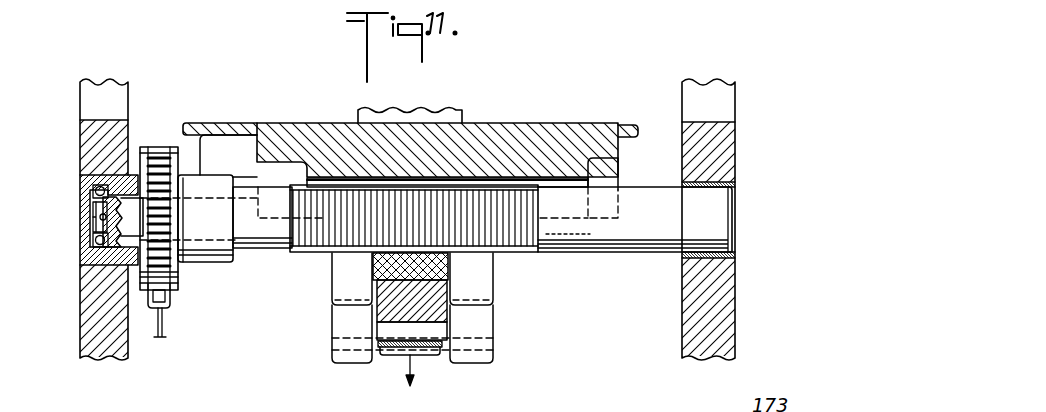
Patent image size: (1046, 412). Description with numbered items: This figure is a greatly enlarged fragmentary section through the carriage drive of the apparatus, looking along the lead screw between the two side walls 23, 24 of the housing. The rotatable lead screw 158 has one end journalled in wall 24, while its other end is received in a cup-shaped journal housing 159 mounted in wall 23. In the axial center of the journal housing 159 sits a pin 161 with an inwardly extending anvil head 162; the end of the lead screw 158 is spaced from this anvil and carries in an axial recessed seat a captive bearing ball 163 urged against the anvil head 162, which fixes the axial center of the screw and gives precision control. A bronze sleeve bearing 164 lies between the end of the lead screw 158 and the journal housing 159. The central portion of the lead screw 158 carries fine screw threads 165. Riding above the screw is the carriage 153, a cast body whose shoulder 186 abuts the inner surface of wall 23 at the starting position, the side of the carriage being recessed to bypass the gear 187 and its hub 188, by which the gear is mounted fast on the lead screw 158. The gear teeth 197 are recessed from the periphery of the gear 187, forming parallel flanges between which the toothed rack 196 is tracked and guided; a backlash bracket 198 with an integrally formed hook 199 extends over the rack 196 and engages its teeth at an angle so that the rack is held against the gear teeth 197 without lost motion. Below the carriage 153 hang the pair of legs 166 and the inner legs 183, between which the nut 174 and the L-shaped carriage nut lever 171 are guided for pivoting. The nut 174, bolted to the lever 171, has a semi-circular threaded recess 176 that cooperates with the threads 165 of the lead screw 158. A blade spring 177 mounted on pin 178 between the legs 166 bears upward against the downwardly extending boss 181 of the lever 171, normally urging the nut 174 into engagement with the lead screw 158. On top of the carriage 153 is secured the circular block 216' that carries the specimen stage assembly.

The side wall 23 is at (92, 128).
The side wall 24 is at (735, 151).
The carriage 153 is at (293, 123).
The lead screw 158 is at (653, 175).
The journal housing 159 is at (112, 256).
The pin 161 is at (93, 218).
The anvil head 162 is at (93, 203).
The bearing ball 163 is at (105, 232).
The sleeve bearing 164 is at (93, 273).
The screw threads 165 is at (495, 186).
The legs 166 is at (340, 316).
The carriage nut lever 171 is at (420, 291).
The nut 174 is at (373, 263).
The threaded recess 176 is at (377, 281).
The blade spring 177 is at (432, 356).
The pin 178 is at (340, 357).
The boss 181 is at (412, 328).
The inner legs 183 is at (340, 272).
The shoulder 186 is at (186, 122).
The gear 187 is at (145, 146).
The hub 188 is at (234, 262).
The toothed rack 196 is at (172, 287).
The gear teeth 197 is at (163, 173).
The backlash bracket 198 is at (163, 321).
The hook 199 is at (166, 298).
The circular block 216' is at (410, 98).